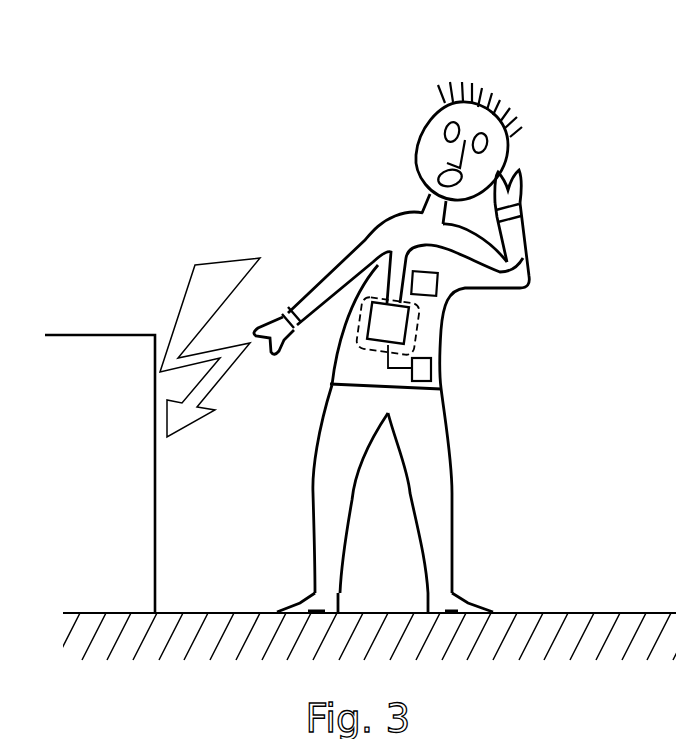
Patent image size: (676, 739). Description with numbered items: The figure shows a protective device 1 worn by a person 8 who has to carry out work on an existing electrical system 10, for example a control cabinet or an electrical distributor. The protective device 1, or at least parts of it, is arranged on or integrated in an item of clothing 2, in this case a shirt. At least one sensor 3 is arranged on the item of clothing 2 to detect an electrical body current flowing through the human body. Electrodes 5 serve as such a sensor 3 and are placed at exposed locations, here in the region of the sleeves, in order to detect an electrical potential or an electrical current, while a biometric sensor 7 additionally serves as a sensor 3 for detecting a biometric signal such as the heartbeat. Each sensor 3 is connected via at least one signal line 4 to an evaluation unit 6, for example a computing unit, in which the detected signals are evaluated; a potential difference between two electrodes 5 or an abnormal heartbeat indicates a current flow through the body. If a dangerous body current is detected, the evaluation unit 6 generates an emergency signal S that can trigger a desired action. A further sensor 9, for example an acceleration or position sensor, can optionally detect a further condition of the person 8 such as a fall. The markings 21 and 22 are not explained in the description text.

The protective device 1 is at (258, 158).
The item of clothing 2 is at (440, 365).
The sensor 3 is at (282, 300).
The signal line 4 is at (368, 258).
The electrode 5 is at (277, 350).
The evaluation unit 6 is at (395, 322).
The biometric sensor 7 is at (437, 286).
The person 8 is at (405, 107).
The further sensor 9 is at (424, 373).
The electrical system 10 is at (38, 462).
The emergency signal S is at (407, 324).
The reference 21 is at (70, 734).
The reference 22 is at (147, 734).